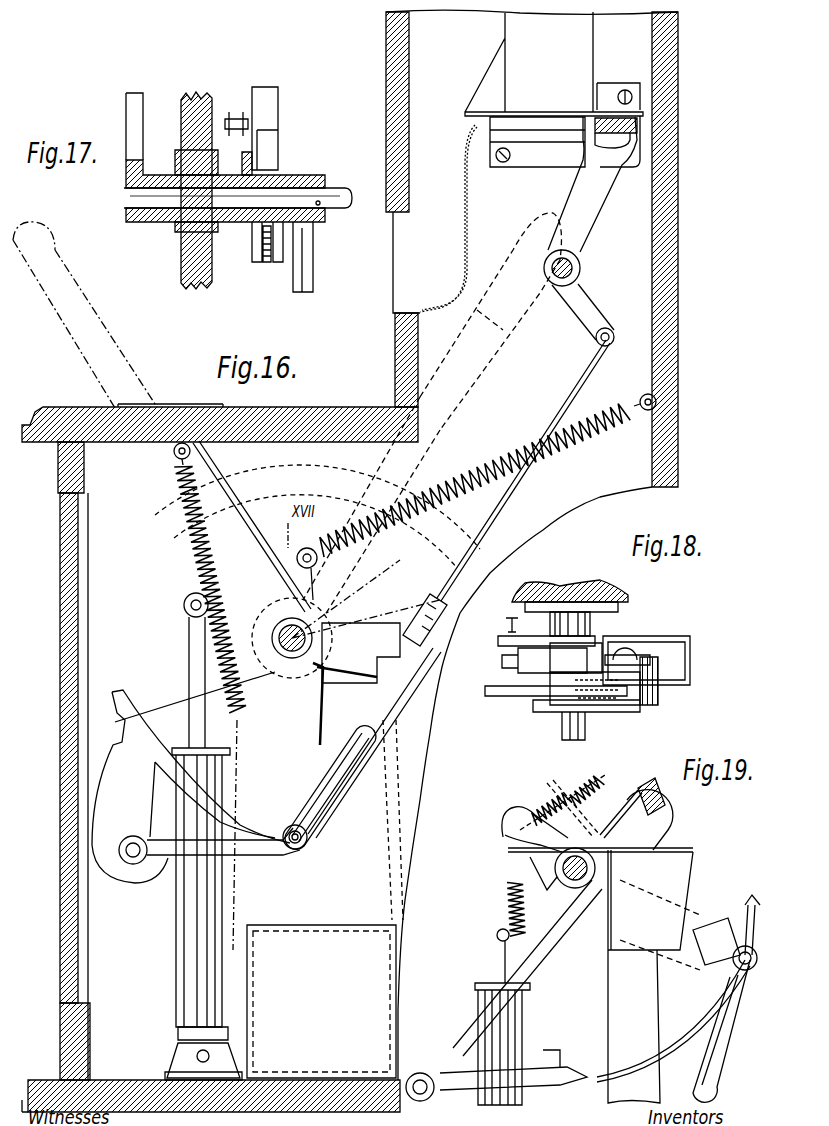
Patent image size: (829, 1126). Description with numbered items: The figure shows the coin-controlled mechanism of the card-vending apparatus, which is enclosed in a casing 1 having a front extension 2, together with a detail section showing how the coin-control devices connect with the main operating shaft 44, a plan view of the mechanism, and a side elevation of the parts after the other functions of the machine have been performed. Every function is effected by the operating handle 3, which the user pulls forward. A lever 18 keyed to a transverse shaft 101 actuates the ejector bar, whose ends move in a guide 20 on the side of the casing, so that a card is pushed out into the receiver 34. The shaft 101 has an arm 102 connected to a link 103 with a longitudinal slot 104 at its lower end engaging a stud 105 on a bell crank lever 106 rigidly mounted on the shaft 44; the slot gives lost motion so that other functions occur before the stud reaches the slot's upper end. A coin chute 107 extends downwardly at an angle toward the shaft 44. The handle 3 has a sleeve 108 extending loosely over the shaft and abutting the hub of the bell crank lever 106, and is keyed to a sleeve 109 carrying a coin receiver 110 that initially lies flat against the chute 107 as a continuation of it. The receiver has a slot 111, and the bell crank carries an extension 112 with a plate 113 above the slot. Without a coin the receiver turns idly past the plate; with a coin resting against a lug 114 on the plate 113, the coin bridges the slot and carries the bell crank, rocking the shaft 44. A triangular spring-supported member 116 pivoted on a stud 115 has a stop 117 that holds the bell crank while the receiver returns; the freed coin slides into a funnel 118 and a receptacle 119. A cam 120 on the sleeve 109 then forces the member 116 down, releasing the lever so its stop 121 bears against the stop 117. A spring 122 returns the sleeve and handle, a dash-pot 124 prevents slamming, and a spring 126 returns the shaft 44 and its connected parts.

In FIG. 16, the casing 1 is at (677, 372).
In FIG. 16, the front extension 2 is at (58, 570).
In FIG. 17, the operating handle 3 is at (141, 118).
In FIG. 16, the operating handle 3 is at (477, 363).
In FIG. 16, the lever 18 is at (592, 184).
In FIG. 16, the guide 20 is at (537, 133).
In FIG. 16, the receiver 34 is at (435, 266).
In FIG. 16, the main operating shaft 44 is at (322, 612).
In FIG. 18, the main operating shaft 44 is at (565, 728).
In FIG. 16, the transverse shaft 101 is at (580, 268).
In FIG. 16, the arm 102 is at (600, 310).
In FIG. 16, the link 103 is at (542, 430).
In FIG. 19, the link 103 is at (747, 913).
In FIG. 16, the longitudinal slot 104 is at (334, 762).
In FIG. 19, the longitudinal slot 104 is at (725, 1045).
In FIG. 16, the stud 105 is at (298, 852).
In FIG. 17, the bell crank lever 106 is at (316, 244).
In FIG. 16, the bell crank lever 106 is at (258, 857).
In FIG. 19, the bell crank lever 106 is at (673, 1000).
In FIG. 17, the coin chute 107 is at (276, 103).
In FIG. 16, the coin chute 107 is at (264, 542).
In FIG. 18, the coin chute 107 is at (530, 660).
In FIG. 19, the coin chute 107 is at (570, 795).
In FIG. 17, the sleeve 108 is at (238, 224).
In FIG. 17, the sleeve 109 is at (290, 176).
In FIG. 17, the coin receiver 110 is at (278, 263).
In FIG. 16, the coin receiver 110 is at (330, 695).
In FIG. 18, the coin receiver 110 is at (596, 646).
In FIG. 19, the coin receiver 110 is at (628, 860).
In FIG. 17, the slot 111 is at (256, 263).
In FIG. 18, the slot 111 is at (645, 652).
In FIG. 18, the extension 112 is at (660, 690).
In FIG. 19, the extension 112 is at (652, 786).
In FIG. 18, the plate 113 is at (612, 655).
In FIG. 19, the plate 113 is at (668, 834).
In FIG. 16, the lug 114 is at (388, 704).
In FIG. 19, the lug 114 is at (652, 857).
In FIG. 16, the stud 115 is at (128, 866).
In FIG. 19, the stud 115 is at (421, 1100).
In FIG. 16, the triangular spring-supported member 116 is at (160, 832).
In FIG. 19, the triangular spring-supported member 116 is at (472, 1020).
In FIG. 19, the stop 117 is at (572, 1085).
In FIG. 16, the funnel 118 is at (386, 762).
In FIG. 18, the funnel 118 is at (690, 657).
In FIG. 19, the funnel 118 is at (634, 1026).
In FIG. 16, the receptacle 119 is at (321, 1001).
In FIG. 18, the cam 120 is at (600, 706).
In FIG. 19, the cam 120 is at (604, 828).
In FIG. 16, the stop 121 is at (285, 870).
In FIG. 19, the stop 121 is at (752, 972).
In FIG. 16, the spring 122 is at (437, 488).
In FIG. 16, the dash-pot 124 is at (180, 940).
In FIG. 19, the dash-pot 124 is at (536, 1005).
In FIG. 16, the spring 126 is at (185, 605).